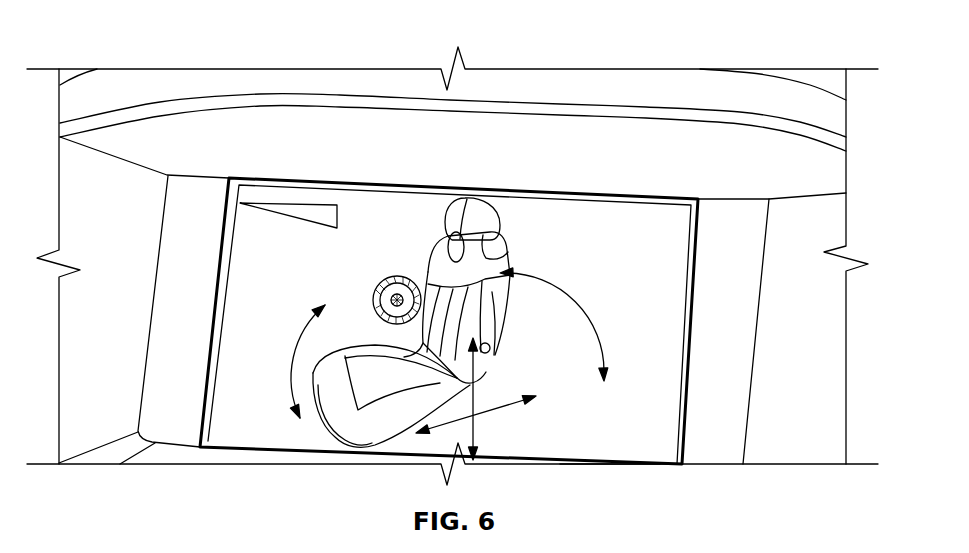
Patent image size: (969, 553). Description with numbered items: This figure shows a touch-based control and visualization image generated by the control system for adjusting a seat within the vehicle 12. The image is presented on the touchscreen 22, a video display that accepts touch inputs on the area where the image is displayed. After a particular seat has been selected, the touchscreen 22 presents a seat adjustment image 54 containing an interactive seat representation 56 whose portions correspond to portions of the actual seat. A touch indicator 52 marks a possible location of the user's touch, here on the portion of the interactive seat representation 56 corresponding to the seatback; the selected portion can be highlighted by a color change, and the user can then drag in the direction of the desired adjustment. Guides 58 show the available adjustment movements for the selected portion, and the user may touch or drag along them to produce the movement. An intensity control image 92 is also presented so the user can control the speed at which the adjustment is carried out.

The vehicle 12 is at (244, 42).
The touchscreen 22 is at (624, 192).
The touch indicator 52 is at (373, 290).
The seat adjustment image 54 is at (608, 426).
The interactive seat representation 56 is at (496, 324).
The guides 58 is at (290, 367).
The intensity control image 92 is at (293, 207).